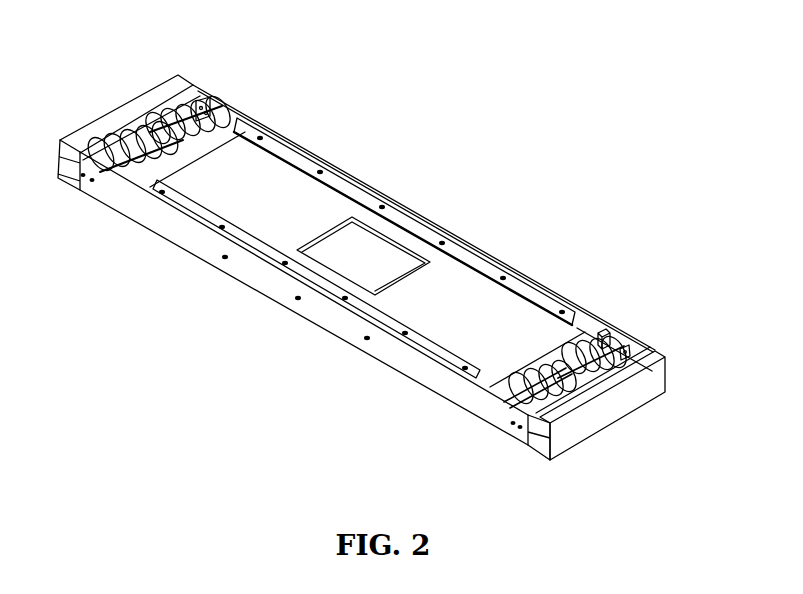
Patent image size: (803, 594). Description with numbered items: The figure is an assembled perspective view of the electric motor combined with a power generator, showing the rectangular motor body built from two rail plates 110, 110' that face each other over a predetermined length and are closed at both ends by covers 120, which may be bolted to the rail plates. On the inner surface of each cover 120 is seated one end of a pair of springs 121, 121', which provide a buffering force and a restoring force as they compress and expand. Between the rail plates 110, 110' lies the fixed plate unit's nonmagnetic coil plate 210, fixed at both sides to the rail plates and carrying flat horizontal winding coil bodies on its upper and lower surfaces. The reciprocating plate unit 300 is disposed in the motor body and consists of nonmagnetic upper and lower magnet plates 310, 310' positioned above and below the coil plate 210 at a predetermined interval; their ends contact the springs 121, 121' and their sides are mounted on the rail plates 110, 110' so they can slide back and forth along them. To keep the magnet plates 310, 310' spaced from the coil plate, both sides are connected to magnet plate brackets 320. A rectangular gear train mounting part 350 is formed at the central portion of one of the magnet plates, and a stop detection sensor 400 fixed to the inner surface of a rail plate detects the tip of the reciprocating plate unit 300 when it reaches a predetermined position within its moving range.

The rail plate 110 is at (424, 199).
The rail plate 110' is at (304, 300).
The cover 120 is at (122, 108).
The spring 121 is at (613, 337).
The spring 121' is at (159, 98).
The coil plate 210 is at (597, 378).
The reciprocating plate unit 300 is at (289, 184).
The upper magnet plate 310 is at (552, 307).
The lower magnet plate 310' is at (652, 392).
The magnet plate bracket 320 is at (470, 262).
The gear train mounting part 350 is at (393, 237).
The first stop detection sensor 400 is at (609, 332).